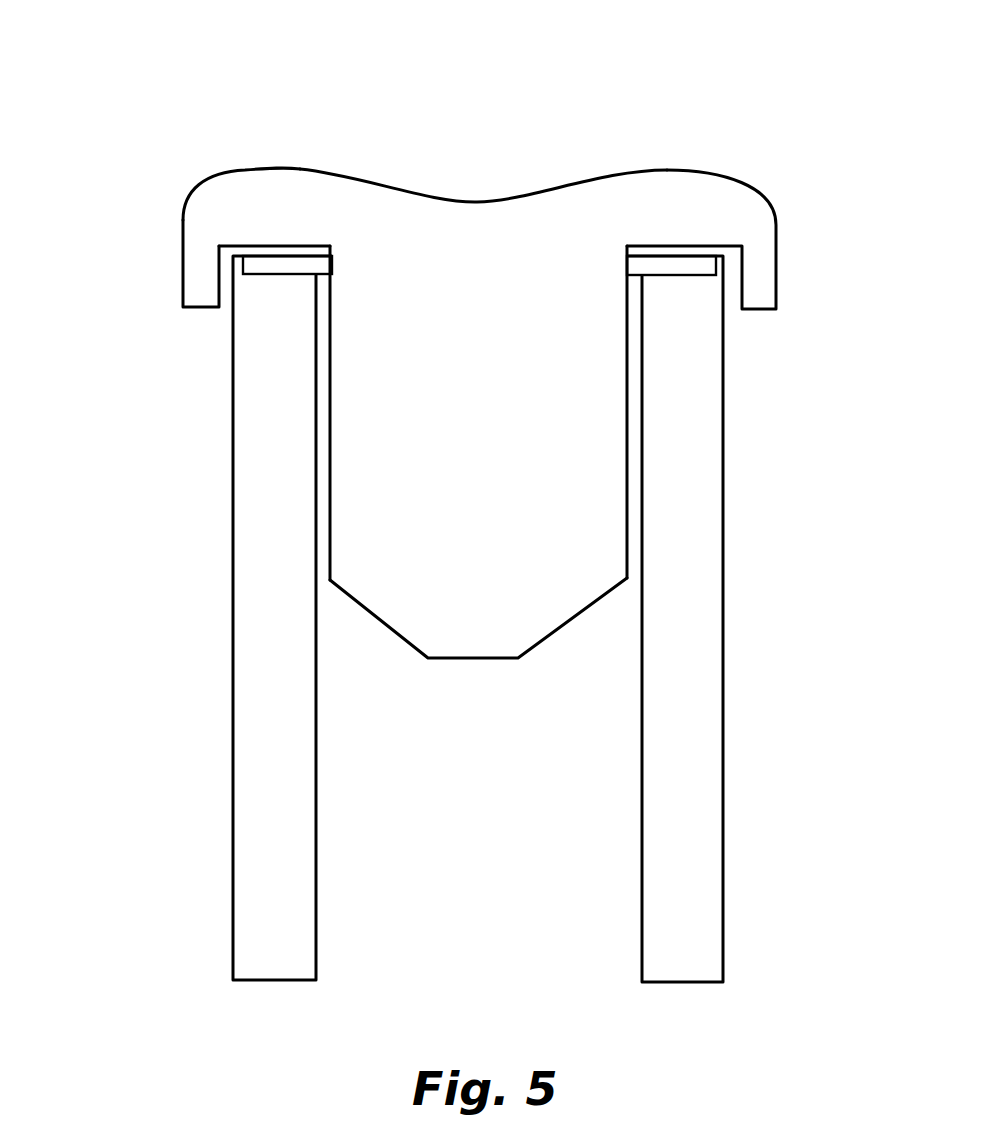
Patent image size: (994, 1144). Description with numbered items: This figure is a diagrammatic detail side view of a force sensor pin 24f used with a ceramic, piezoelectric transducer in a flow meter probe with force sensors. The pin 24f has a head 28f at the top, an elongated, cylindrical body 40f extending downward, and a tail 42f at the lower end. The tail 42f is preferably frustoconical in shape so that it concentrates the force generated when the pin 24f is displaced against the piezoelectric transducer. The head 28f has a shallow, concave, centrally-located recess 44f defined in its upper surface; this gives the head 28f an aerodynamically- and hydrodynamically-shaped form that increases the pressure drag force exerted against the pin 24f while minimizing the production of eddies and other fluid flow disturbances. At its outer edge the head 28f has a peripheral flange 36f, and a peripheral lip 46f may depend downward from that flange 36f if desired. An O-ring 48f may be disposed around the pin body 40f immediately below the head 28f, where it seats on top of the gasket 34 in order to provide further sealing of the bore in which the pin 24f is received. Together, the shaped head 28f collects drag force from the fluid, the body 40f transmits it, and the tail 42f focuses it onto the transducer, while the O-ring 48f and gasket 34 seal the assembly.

The pin 24f is at (446, 357).
The head 28f is at (342, 207).
The peripheral flange 36f is at (237, 197).
The recess 44f is at (477, 202).
The peripheral lip 46f is at (182, 265).
The O-ring 48f is at (672, 277).
The body 40f is at (497, 454).
The tail 42f is at (560, 610).
The gasket 34 is at (232, 593).